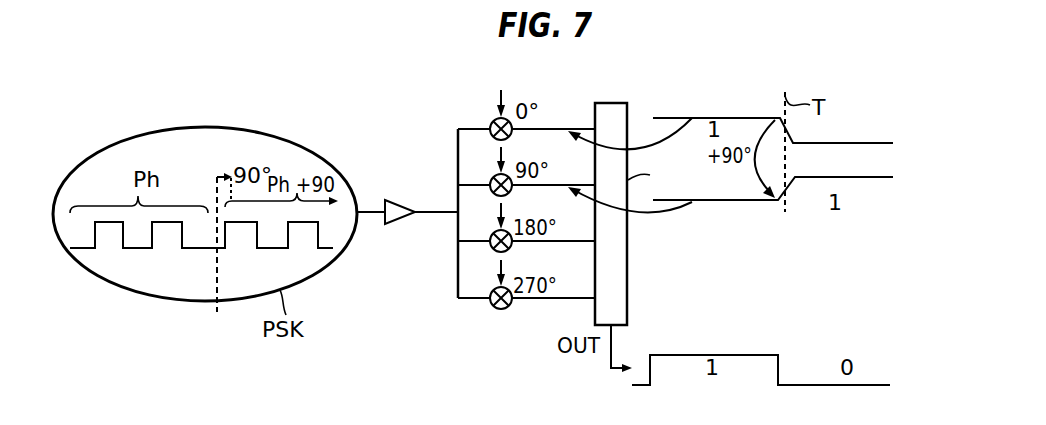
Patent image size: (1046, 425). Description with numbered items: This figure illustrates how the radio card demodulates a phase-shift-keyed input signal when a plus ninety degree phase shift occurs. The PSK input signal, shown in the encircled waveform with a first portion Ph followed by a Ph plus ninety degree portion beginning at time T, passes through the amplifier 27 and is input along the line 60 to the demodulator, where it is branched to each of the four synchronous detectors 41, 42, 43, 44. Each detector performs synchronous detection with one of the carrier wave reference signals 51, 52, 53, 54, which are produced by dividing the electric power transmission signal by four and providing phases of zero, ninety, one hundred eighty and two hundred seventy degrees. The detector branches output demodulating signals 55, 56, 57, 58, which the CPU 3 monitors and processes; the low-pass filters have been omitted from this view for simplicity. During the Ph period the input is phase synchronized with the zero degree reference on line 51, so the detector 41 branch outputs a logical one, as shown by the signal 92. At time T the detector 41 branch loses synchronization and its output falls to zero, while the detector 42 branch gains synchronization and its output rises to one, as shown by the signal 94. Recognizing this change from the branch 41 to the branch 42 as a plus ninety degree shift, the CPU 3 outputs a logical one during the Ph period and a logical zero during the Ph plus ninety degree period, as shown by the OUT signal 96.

The CPU 3 is at (628, 278).
The amplifier 27 is at (402, 226).
The synchronous detector 41 is at (493, 138).
The synchronous detector 42 is at (493, 194).
The synchronous detector 43 is at (493, 250).
The synchronous detector 44 is at (493, 307).
The carrier wave reference signal 51 is at (503, 99).
The carrier wave reference signal 52 is at (503, 156).
The carrier wave reference signal 53 is at (503, 212).
The carrier wave reference signal 54 is at (503, 269).
The demodulating signal 55 is at (556, 128).
The demodulating signal 56 is at (556, 184).
The demodulating signal 57 is at (556, 240).
The demodulating signal 58 is at (556, 297).
The line 60 is at (422, 211).
The signal 92 is at (702, 118).
The signal 94 is at (702, 202).
The OUT signal 96 is at (735, 355).